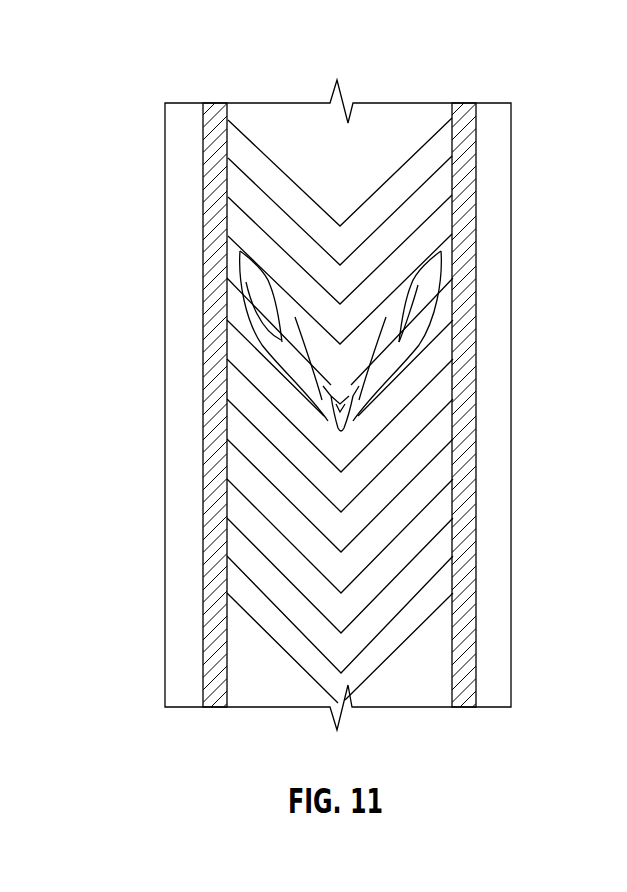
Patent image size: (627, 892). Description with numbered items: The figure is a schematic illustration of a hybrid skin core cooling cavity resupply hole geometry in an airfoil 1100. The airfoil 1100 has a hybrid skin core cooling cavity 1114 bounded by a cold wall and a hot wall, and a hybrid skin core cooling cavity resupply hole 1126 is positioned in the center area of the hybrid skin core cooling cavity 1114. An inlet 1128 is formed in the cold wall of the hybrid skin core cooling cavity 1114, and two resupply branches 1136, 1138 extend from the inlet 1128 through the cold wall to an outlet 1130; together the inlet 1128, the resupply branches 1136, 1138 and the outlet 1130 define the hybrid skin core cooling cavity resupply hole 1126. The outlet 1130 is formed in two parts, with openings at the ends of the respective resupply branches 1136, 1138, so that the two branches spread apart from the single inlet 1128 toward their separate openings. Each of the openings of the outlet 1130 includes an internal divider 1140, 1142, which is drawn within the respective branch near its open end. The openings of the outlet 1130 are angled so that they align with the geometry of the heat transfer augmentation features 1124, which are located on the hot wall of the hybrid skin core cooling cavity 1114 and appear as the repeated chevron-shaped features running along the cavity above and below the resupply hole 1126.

The airfoil 1100 is at (516, 216).
The hybrid skin core cooling cavity 1114 is at (364, 124).
The heat transfer augmentation features 1124 is at (403, 492).
The hybrid skin core cooling cavity resupply hole 1126 is at (291, 377).
The inlet 1128 is at (334, 408).
The outlet 1130 is at (246, 282).
The resupply branch 1136 is at (302, 375).
The resupply branch 1138 is at (395, 363).
The internal divider 1140 is at (243, 303).
The internal divider 1142 is at (432, 318).